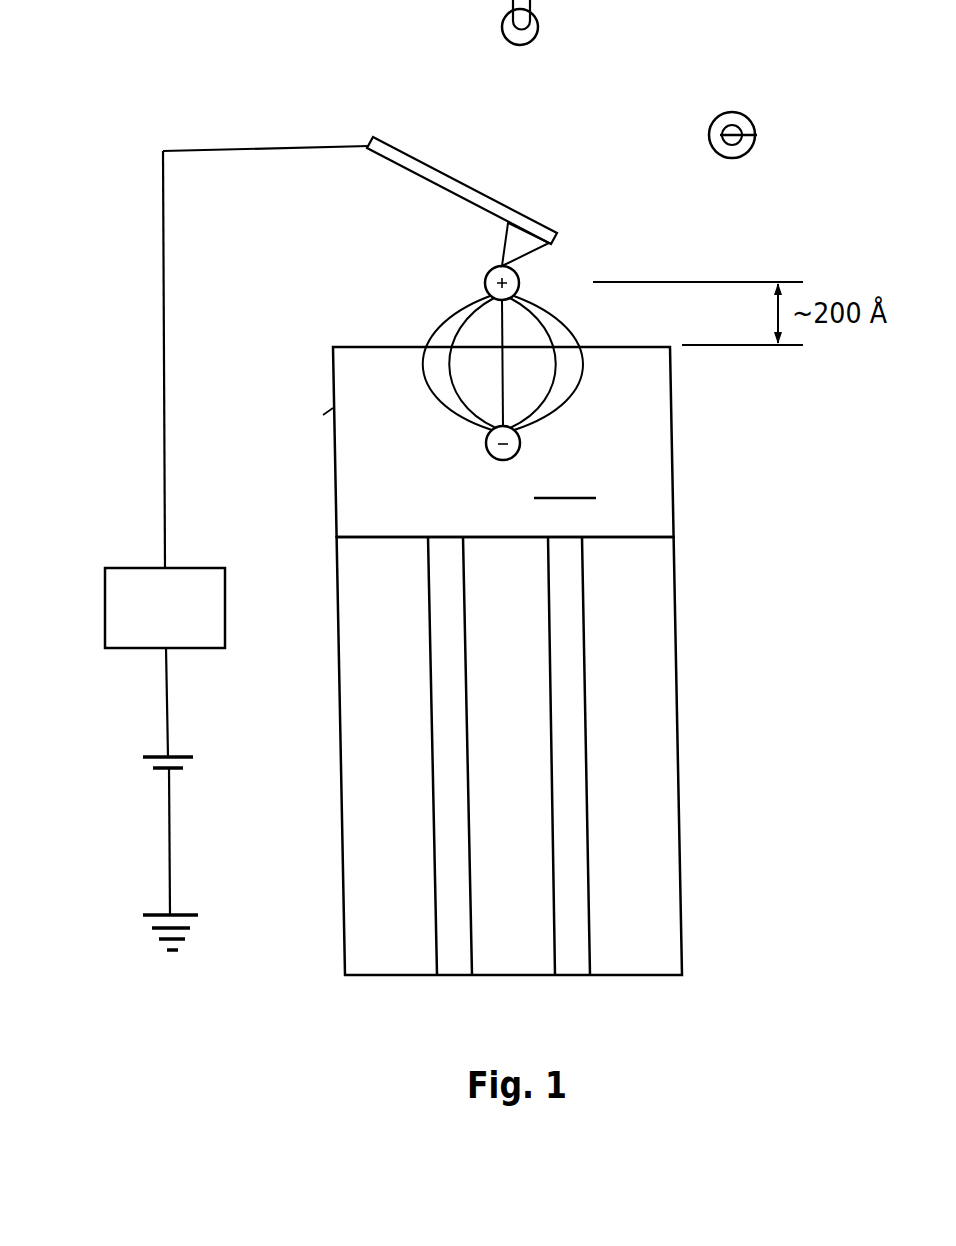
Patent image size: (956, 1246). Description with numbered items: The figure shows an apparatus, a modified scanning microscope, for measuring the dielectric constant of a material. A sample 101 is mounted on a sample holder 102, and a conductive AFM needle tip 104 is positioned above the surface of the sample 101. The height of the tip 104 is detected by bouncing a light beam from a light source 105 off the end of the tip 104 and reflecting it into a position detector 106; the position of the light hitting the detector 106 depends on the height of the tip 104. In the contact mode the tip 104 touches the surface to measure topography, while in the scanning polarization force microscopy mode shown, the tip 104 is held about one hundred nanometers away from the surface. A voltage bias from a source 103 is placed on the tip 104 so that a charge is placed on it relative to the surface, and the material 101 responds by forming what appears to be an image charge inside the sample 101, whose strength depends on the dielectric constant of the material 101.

The sample 101 is at (673, 495).
The sample holder 102 is at (674, 710).
The voltage bias source 103 is at (96, 568).
The tip 104 is at (409, 172).
The light source 105 is at (503, 29).
The position detector 106 is at (751, 151).